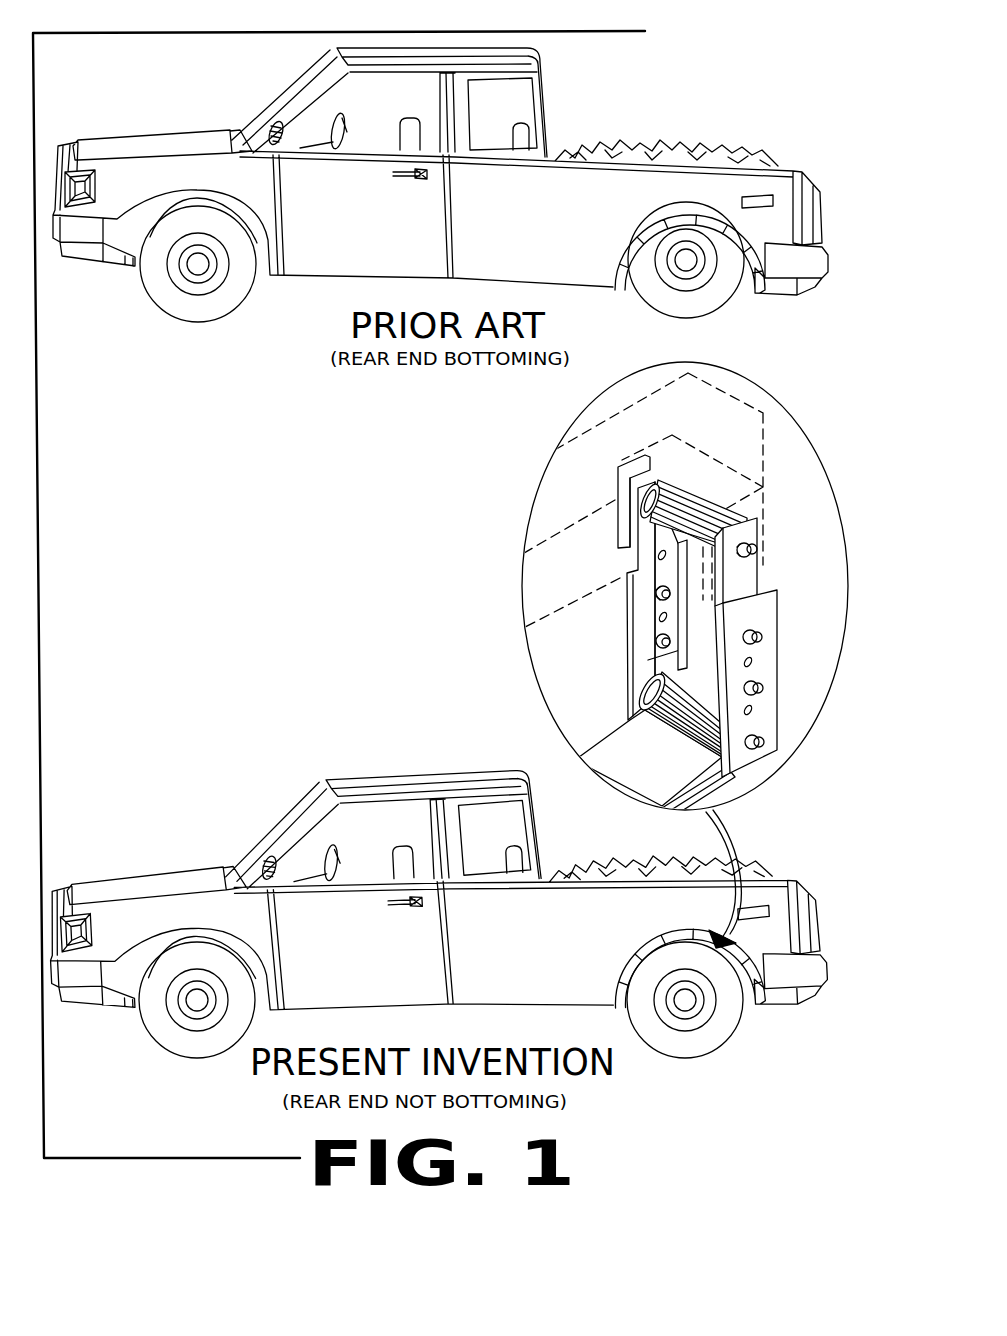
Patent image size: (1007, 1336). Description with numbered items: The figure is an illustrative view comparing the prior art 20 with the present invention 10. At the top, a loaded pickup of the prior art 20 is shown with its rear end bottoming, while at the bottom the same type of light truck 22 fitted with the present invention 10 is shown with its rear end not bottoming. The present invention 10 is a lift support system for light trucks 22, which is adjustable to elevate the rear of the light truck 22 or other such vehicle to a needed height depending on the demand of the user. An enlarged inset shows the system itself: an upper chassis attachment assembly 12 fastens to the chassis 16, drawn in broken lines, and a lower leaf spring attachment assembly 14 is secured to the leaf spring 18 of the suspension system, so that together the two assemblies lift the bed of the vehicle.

The lift support system for light trucks 10 is at (804, 391).
The upper chassis attachment assembly 12 is at (764, 551).
The lower leaf spring attachment assembly 14 is at (788, 643).
The chassis 16 is at (577, 522).
The leaf spring 18 is at (612, 746).
The prior art 20 is at (769, 127).
The light truck 22 is at (550, 115).